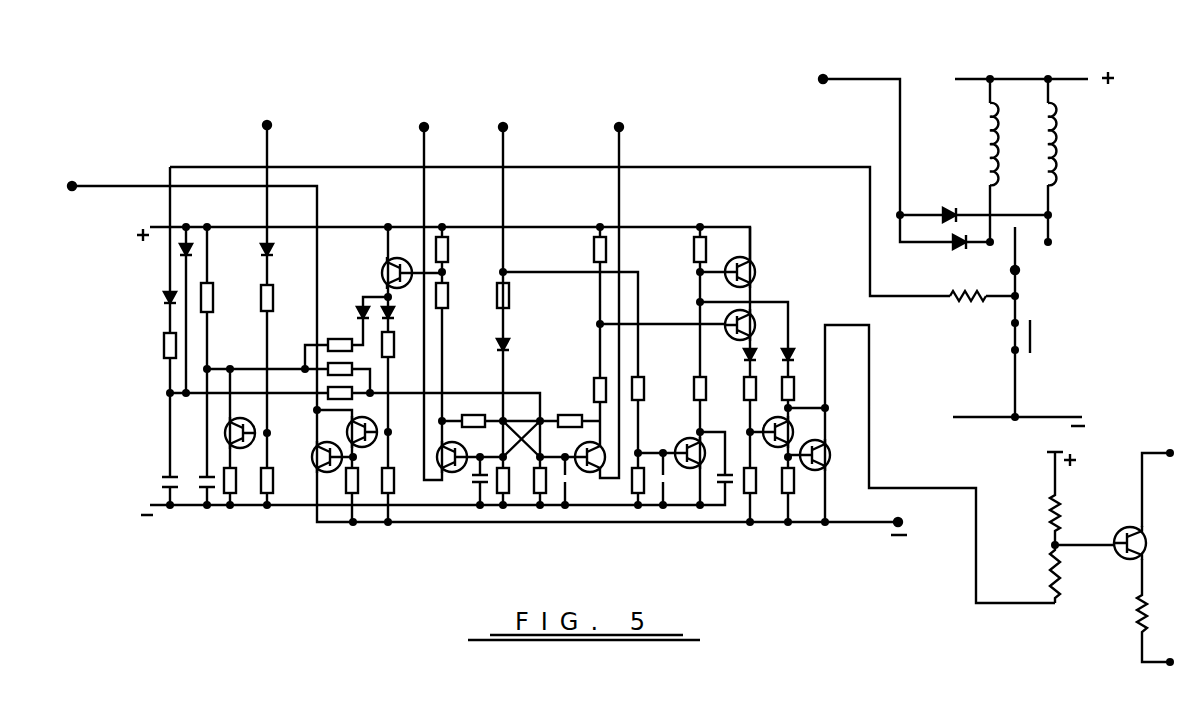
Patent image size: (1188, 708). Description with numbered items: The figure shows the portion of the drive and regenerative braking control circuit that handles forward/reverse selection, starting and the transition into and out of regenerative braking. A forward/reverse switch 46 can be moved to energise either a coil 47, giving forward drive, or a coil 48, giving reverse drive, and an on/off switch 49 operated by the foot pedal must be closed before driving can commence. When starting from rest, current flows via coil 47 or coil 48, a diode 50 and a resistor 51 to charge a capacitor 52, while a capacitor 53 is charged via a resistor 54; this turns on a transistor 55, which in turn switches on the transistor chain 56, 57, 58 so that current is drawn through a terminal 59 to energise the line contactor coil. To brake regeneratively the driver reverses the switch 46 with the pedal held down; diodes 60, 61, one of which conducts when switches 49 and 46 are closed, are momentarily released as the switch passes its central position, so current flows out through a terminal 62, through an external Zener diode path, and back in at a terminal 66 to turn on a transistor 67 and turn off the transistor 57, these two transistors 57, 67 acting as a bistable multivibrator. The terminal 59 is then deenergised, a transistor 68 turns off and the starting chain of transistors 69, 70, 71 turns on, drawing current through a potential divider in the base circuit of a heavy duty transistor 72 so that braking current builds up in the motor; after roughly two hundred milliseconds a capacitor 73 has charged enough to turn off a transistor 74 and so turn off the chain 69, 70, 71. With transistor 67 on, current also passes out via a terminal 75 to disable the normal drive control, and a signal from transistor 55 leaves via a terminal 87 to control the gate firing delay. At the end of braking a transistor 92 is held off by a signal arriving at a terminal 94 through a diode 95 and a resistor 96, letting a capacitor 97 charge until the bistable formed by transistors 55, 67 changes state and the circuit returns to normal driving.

The forward/reverse switch 46 is at (1022, 250).
The coil 47 is at (984, 133).
The coil 48 is at (1052, 148).
The on/off switch 49 is at (1040, 340).
The diode 50 is at (165, 300).
The resistor 51 is at (164, 348).
The capacitor 52 is at (162, 479).
The capacitor 53 is at (473, 486).
The resistor 54 is at (345, 393).
The transistor 55 is at (448, 473).
The transistor 56 is at (385, 269).
The transistor 57 is at (348, 431).
The transistor 58 is at (314, 460).
The terminal 59 is at (74, 184).
The diode 60 is at (946, 210).
The diode 61 is at (956, 250).
The terminal 62 is at (821, 77).
The terminal 66 is at (502, 125).
The transistor 67 is at (590, 472).
The transistor 68 is at (689, 440).
The transistor 69 is at (729, 336).
The transistor 70 is at (792, 428).
The transistor 71 is at (829, 455).
The heavy duty transistor 72 is at (1116, 534).
The capacitor 73 is at (718, 488).
The transistor 74 is at (752, 265).
The terminal 75 is at (620, 125).
The terminal 87 is at (422, 126).
The transistor 92 is at (225, 432).
The terminal 94 is at (265, 123).
The diode 95 is at (262, 250).
The resistor 96 is at (261, 298).
The capacitor 97 is at (204, 490).